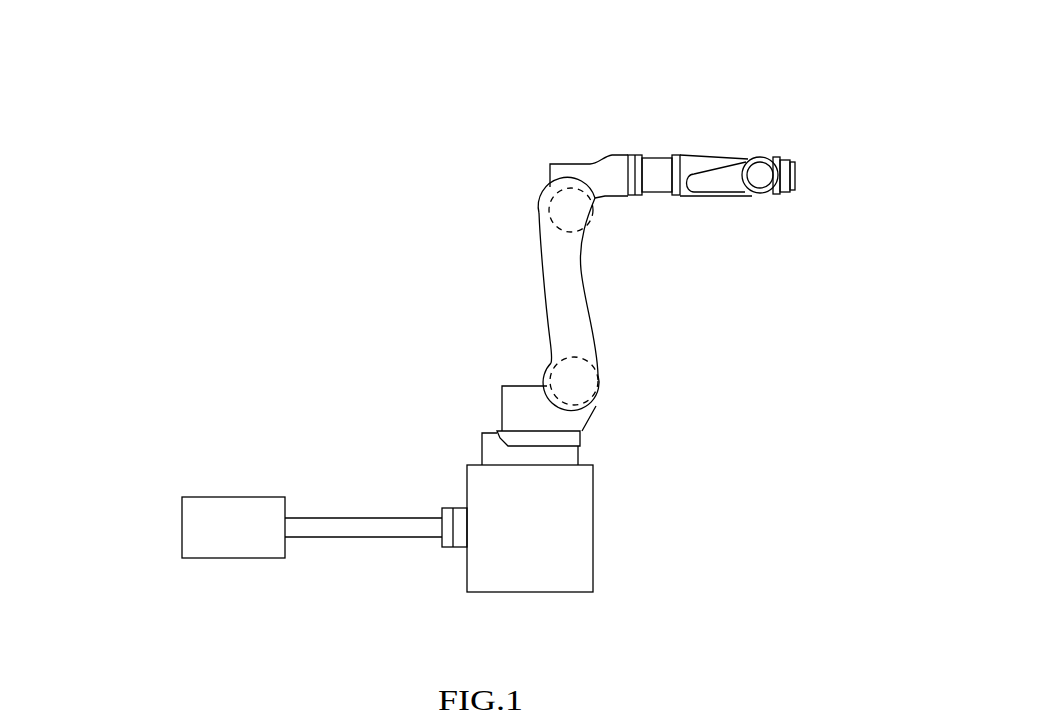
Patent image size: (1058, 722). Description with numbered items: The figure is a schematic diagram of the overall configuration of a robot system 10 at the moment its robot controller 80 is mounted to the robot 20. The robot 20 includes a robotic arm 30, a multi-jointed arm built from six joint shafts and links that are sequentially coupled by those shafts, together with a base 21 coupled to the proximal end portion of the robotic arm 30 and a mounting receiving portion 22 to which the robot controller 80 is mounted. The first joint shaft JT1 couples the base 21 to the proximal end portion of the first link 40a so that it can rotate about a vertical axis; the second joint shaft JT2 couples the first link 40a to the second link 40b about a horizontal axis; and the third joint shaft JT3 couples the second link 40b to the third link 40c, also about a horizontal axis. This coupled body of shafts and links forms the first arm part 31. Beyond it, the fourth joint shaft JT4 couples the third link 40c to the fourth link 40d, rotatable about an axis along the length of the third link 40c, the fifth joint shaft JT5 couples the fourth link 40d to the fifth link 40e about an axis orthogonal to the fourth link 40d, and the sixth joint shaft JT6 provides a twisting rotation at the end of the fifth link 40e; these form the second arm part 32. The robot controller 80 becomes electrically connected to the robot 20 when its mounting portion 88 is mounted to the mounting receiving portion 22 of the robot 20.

The robot system 10 is at (134, 121).
The robot 20 is at (446, 96).
The base 21 is at (593, 564).
The mounting receiving portion 22 is at (460, 548).
The robotic arm 30 is at (518, 121).
The first arm part 31 is at (533, 238).
The second arm part 32 is at (663, 153).
The first link 40a is at (515, 383).
The second link 40b is at (543, 280).
The third link 40c is at (603, 155).
The fourth link 40d is at (695, 153).
The fifth link 40e is at (778, 157).
The robot controller 80 is at (232, 486).
The mounting portion 88 is at (452, 508).
The first joint shaft JT1 is at (580, 436).
The second joint shaft JT2 is at (585, 387).
The third joint shaft JT3 is at (563, 208).
The fourth joint shaft JT4 is at (637, 155).
The fifth joint shaft JT5 is at (760, 157).
The sixth joint shaft JT6 is at (793, 160).